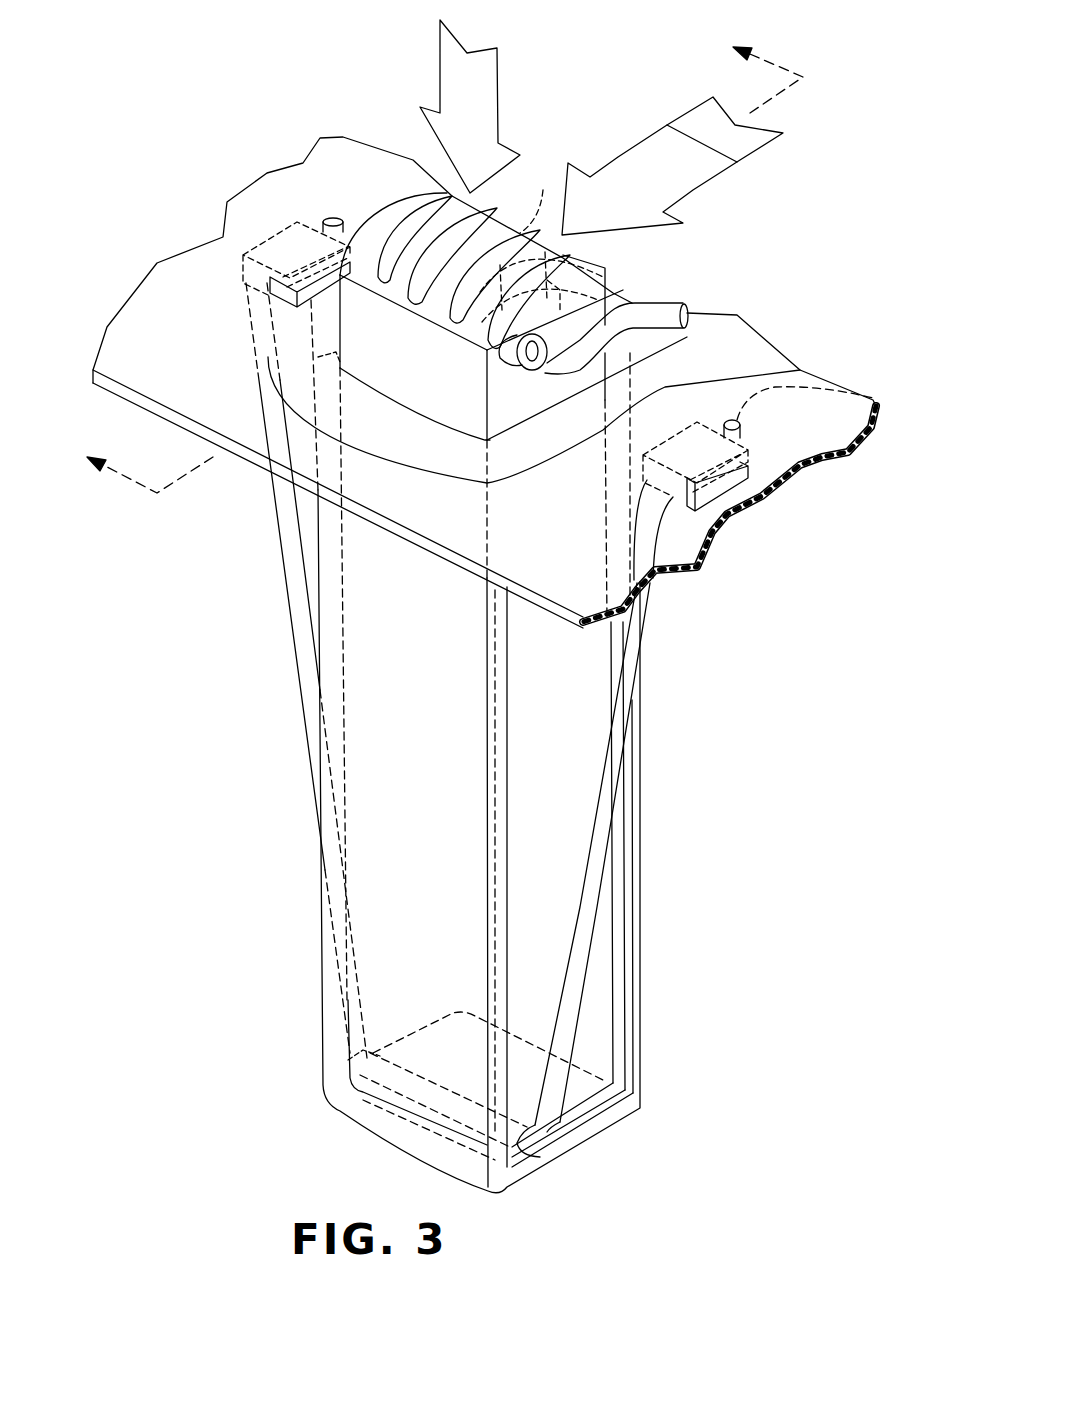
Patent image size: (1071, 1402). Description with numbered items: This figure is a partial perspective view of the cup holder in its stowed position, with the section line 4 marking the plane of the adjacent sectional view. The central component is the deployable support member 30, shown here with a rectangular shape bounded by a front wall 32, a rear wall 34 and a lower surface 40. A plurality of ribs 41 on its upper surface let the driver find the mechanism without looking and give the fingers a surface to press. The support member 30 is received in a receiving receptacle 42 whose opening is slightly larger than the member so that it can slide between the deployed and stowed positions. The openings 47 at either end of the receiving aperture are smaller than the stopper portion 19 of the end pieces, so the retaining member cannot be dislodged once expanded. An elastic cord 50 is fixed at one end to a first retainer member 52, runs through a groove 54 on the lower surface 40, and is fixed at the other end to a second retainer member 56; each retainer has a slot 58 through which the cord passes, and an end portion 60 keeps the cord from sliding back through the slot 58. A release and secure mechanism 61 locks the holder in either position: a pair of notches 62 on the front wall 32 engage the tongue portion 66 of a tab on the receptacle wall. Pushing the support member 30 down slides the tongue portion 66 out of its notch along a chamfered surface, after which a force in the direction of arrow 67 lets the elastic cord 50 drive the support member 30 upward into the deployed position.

The section line 4- 4 is at (432, 260).
The stopper portion 19 is at (539, 197).
The support member 30 is at (416, 192).
The front wall 32 is at (575, 272).
The rear wall 34 is at (410, 377).
The lower surface 40 is at (600, 1100).
The ribs 41 is at (447, 212).
The receiving receptacle 42 is at (338, 368).
The openings 47 is at (547, 372).
The elastic cord 50 is at (583, 957).
The first retainer member 52 is at (740, 495).
The groove 54 is at (520, 1143).
The second retainer member 56 is at (278, 228).
The slot 58 is at (728, 512).
The end portion 60 is at (873, 398).
The release and secure mechanism 61 is at (575, 308).
The notches 62 is at (575, 292).
The tongue portion 66 is at (560, 310).
The arrow 67 is at (699, 166).